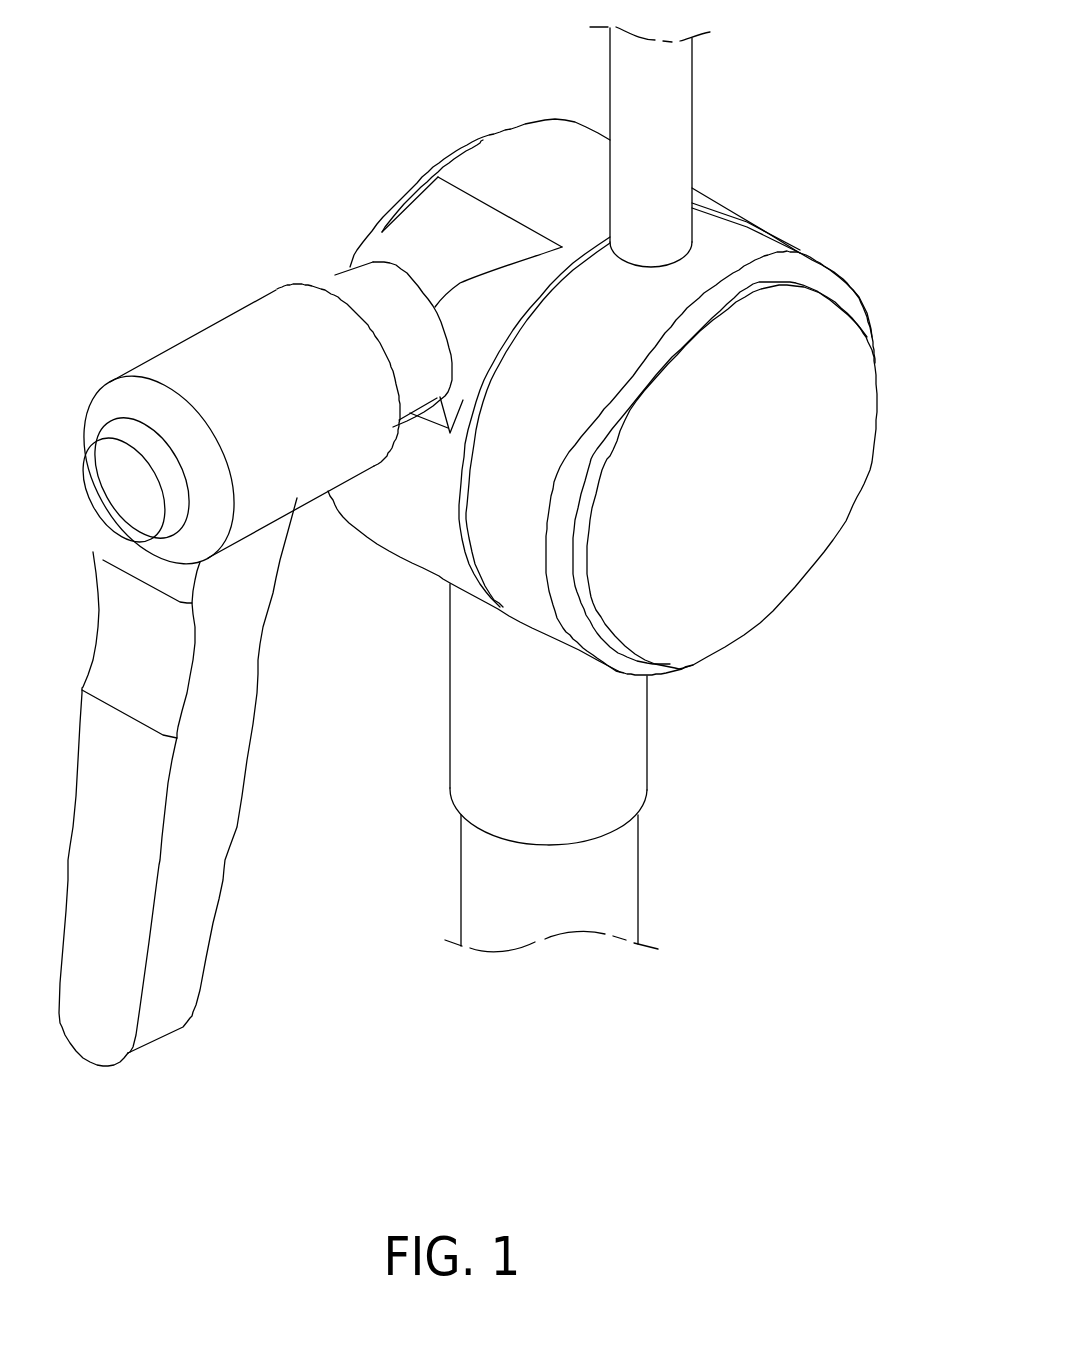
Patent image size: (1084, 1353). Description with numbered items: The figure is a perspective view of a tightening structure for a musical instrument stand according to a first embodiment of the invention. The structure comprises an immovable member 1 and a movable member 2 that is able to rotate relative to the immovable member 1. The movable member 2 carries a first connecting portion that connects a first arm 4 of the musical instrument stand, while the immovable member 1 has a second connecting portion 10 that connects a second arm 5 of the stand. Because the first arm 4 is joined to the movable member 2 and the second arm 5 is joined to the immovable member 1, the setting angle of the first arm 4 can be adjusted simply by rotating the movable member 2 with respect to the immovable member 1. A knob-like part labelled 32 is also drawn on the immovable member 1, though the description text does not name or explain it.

The immovable member 1 is at (522, 153).
The movable member 2 is at (855, 402).
The first arm 4 is at (675, 138).
The second arm 5 is at (630, 890).
The second connecting portion 10 is at (467, 734).
The knob 32 is at (208, 352).